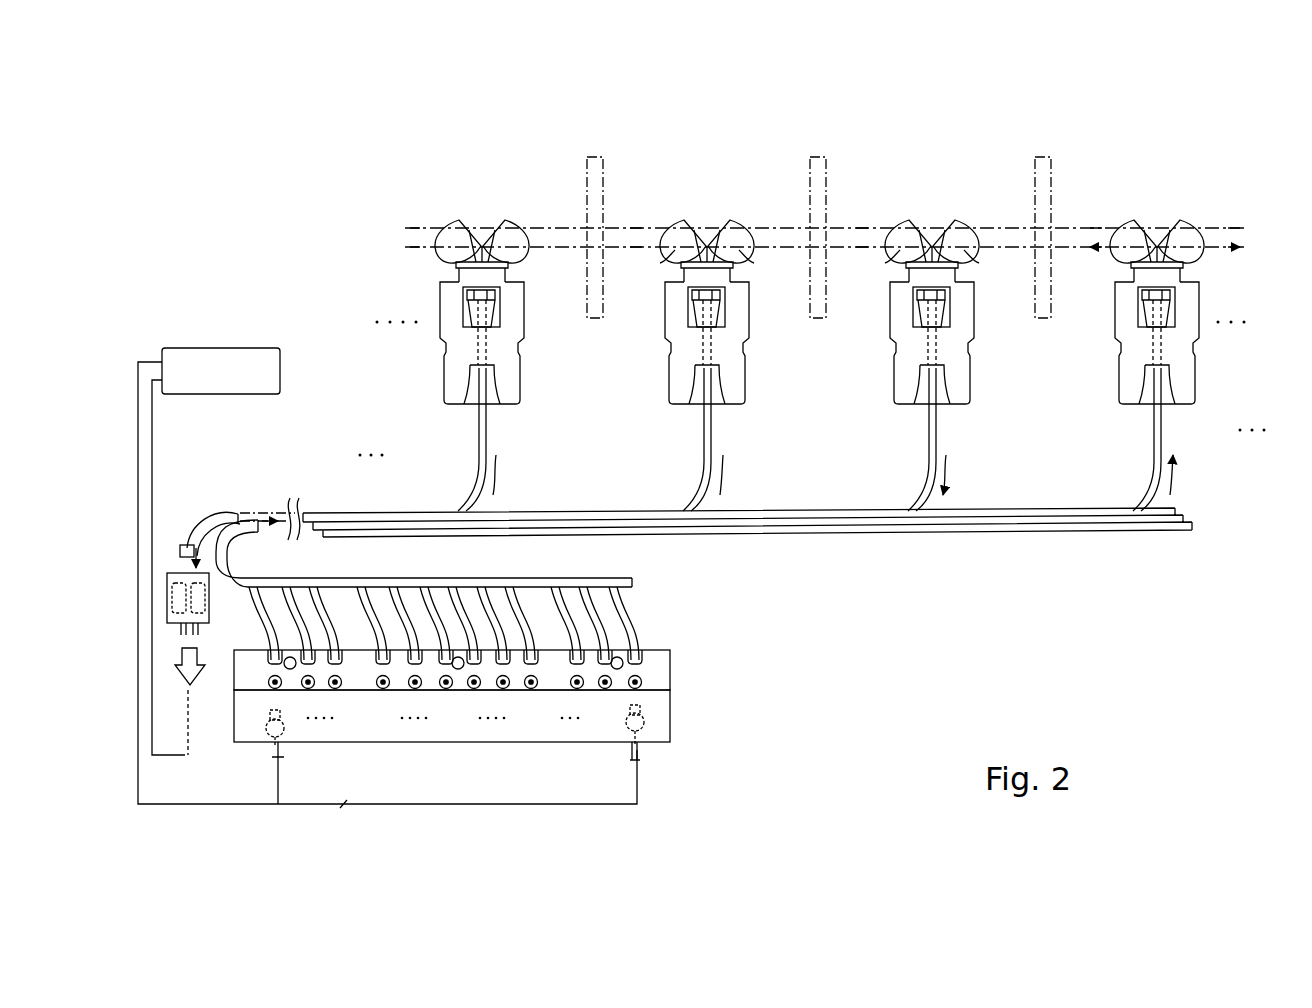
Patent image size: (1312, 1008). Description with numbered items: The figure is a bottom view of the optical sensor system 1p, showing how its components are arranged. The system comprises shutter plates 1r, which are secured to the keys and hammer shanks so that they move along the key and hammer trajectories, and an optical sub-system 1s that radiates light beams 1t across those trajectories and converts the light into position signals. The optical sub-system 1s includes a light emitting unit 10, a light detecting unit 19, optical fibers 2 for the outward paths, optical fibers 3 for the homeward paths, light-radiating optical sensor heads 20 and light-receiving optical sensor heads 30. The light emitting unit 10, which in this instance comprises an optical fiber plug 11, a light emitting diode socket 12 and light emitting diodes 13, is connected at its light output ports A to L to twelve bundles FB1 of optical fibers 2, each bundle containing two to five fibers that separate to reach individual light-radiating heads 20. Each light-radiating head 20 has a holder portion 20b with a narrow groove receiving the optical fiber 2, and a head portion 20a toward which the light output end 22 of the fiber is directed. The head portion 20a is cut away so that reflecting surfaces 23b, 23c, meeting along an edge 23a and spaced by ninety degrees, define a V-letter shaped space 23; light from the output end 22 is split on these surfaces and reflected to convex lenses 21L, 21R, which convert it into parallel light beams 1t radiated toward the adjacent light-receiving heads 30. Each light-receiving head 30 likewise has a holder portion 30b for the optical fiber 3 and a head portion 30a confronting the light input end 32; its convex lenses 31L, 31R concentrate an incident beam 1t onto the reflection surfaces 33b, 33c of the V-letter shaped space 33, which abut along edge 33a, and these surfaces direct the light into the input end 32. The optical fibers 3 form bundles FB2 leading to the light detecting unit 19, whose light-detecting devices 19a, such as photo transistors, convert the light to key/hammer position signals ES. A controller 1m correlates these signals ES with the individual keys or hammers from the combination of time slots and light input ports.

The light beams 1t is at (606, 227).
The shutter plates 1r is at (598, 166).
The optical sensor system 1p is at (1175, 172).
The optical sub-system 1s is at (1196, 217).
The controller 1m is at (252, 348).
The optical fibers 2 is at (715, 433).
The optical fibers 3 is at (490, 433).
The light emitting unit 10 is at (491, 724).
The optical fiber plug 11 is at (672, 655).
The light emitting diode socket 12 is at (672, 728).
The light emitting diodes 13 is at (270, 740).
The light detecting unit 19 is at (178, 568).
The light-detecting devices 19a is at (212, 590).
The light-radiating optical sensor heads 20 is at (864, 301).
The head portion 20a is at (685, 276).
The holder portion 20b is at (749, 385).
The convex lens 21L is at (678, 250).
The convex lens 21R is at (735, 250).
The light output end 22 is at (683, 300).
The V-letter shaped space 23 is at (704, 195).
The edge 23a is at (728, 275).
The reflecting surface 23b is at (723, 232).
The reflecting surface 23c is at (690, 230).
The light-receiving optical sensor heads 30 is at (721, 301).
The head portion 30a is at (910, 276).
The holder portion 30b is at (974, 385).
The convex lens 31L is at (903, 250).
The convex lens 31R is at (960, 250).
The light input end 32 is at (908, 300).
The V-letter shaped space 33 is at (929, 195).
The edge 33a is at (952, 275).
The reflecting surface 33b is at (948, 232).
The reflecting surface 33c is at (915, 230).
The bundles of optical fibers FB1 is at (632, 587).
The bundles of optical fibers FB2 is at (222, 512).
The key/hammer position signals ES is at (187, 701).